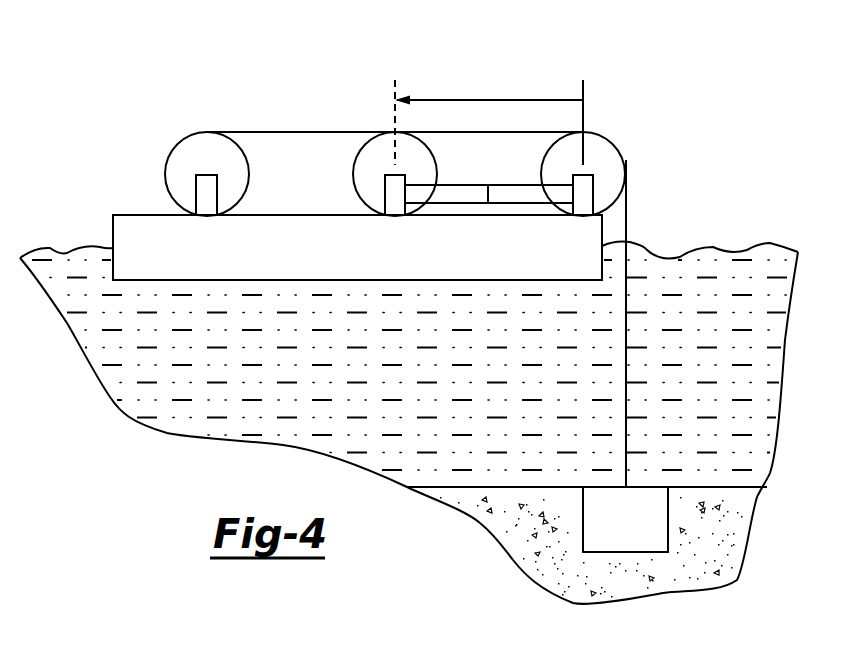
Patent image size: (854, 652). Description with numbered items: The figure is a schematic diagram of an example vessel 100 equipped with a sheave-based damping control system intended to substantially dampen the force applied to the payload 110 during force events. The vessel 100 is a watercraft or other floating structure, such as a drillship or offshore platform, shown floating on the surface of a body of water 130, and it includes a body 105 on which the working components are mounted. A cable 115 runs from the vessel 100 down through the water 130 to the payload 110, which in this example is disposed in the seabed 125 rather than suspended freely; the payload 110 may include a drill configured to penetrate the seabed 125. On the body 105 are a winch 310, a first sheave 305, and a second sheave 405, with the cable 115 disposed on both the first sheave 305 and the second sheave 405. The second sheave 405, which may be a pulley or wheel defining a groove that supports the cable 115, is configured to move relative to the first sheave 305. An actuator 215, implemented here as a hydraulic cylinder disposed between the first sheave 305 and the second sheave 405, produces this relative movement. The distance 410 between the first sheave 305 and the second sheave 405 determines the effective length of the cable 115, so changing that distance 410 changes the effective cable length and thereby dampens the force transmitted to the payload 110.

The vessel 100 is at (672, 172).
The body 105 is at (346, 261).
The payload 110 is at (615, 531).
The cable 115 is at (627, 397).
The seabed 125 is at (737, 487).
The body of water 130 is at (772, 247).
The actuator 215 is at (508, 197).
The first sheave 305 is at (616, 148).
The winch 310 is at (172, 142).
The second sheave 405 is at (351, 169).
The distance 410 is at (487, 98).